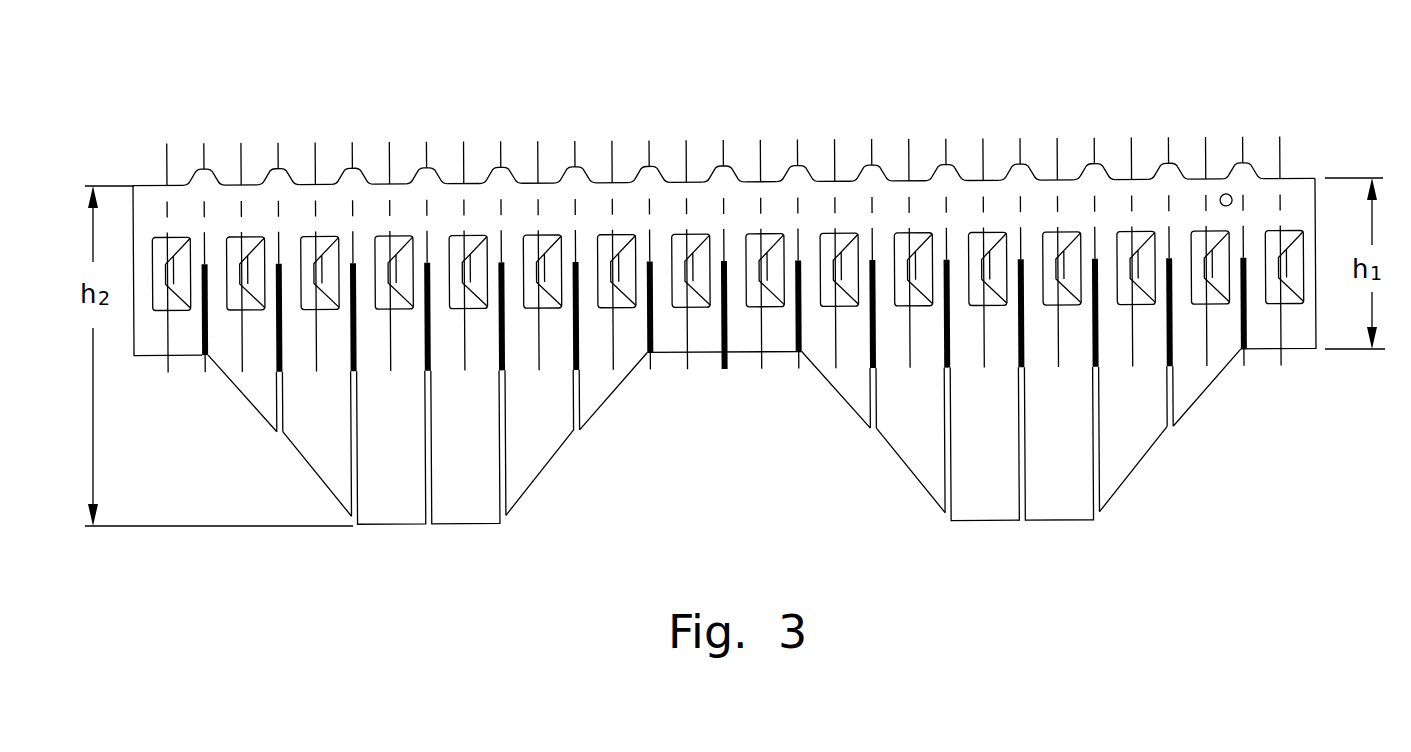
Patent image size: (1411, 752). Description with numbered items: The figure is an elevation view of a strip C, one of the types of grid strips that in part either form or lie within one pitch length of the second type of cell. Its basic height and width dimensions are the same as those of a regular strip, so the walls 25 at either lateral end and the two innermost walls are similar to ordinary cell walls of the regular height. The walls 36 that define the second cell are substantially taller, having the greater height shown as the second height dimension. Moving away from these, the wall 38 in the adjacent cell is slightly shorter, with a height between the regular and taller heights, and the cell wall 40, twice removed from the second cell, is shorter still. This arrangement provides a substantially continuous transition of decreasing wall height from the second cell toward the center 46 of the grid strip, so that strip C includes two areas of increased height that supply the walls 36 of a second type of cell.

The wall 25 is at (152, 340).
The wall 36 is at (388, 522).
The wall 38 is at (312, 468).
The cell wall 40 is at (250, 405).
The center 46 is at (722, 163).
The strip C is at (749, 114).